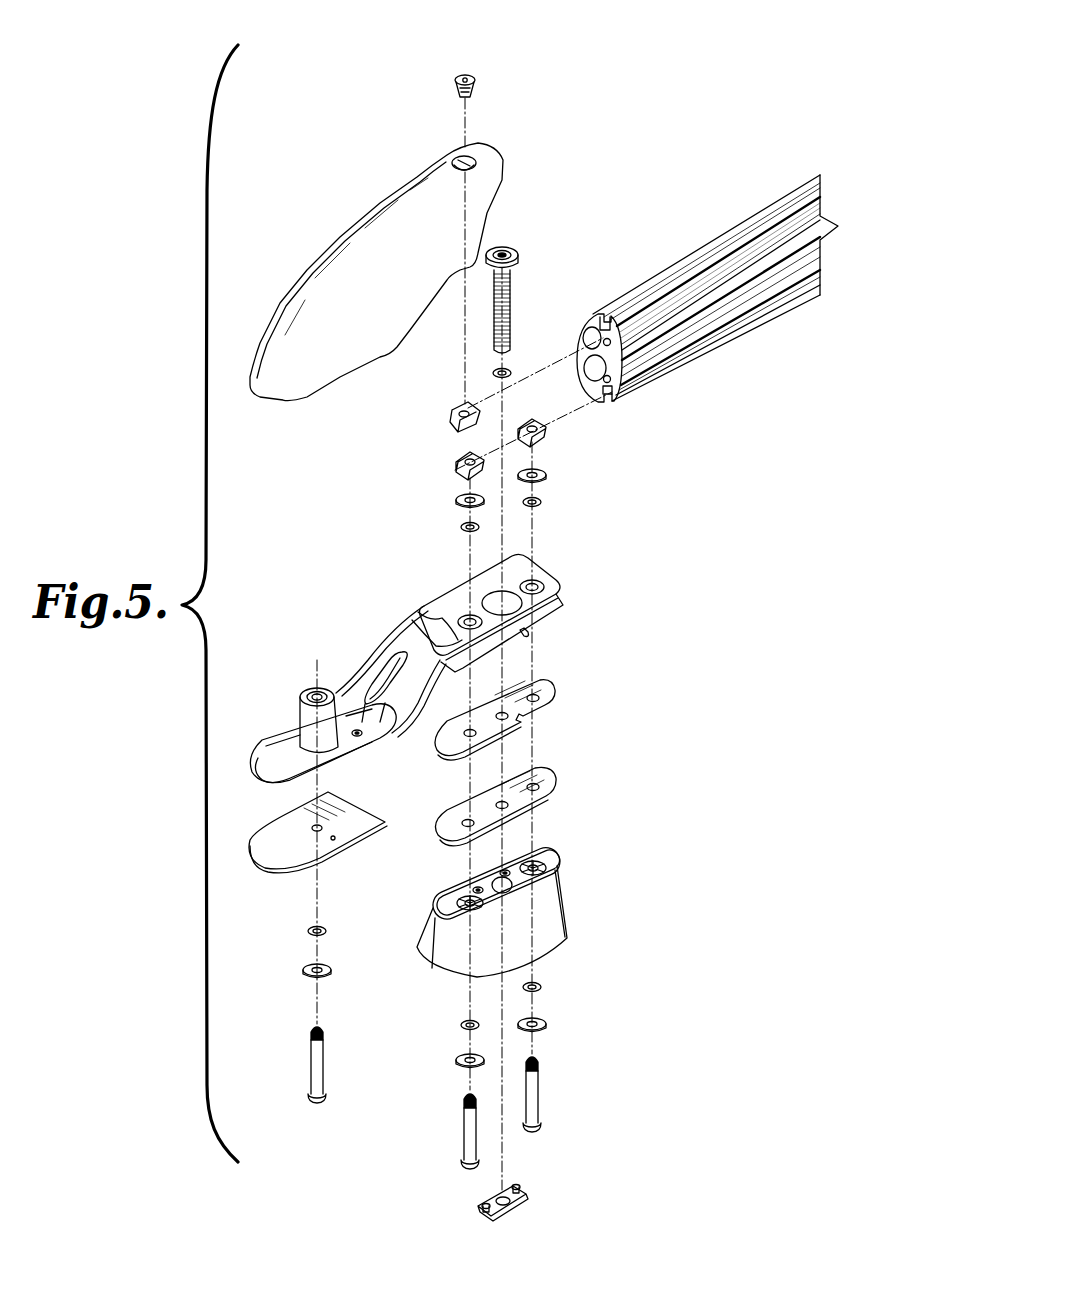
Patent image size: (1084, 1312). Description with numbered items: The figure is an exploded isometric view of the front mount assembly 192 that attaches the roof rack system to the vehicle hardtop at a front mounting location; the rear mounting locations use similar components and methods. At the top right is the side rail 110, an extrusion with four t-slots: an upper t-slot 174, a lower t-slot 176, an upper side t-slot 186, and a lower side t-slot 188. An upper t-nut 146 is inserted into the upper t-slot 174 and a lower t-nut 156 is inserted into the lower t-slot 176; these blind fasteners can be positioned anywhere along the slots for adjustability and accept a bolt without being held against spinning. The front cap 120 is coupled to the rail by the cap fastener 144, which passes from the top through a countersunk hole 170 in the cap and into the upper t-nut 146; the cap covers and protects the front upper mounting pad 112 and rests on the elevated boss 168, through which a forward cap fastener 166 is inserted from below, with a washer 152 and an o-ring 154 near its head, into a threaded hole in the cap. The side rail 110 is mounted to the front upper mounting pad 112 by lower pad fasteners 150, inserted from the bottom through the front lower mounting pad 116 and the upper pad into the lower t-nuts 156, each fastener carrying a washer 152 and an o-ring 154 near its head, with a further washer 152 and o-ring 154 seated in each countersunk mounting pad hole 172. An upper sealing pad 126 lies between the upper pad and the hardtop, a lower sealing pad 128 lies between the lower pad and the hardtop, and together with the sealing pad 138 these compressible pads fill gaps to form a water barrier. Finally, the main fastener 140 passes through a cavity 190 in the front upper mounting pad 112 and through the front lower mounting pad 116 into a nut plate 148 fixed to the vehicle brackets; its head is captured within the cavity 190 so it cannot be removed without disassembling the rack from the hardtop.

The side rail 110 is at (690, 368).
The front upper mounting pad 112 is at (565, 596).
The front lower mounting pad 116 is at (428, 950).
The front cap 120 is at (350, 226).
The upper sealing pad 126 is at (556, 694).
The lower sealing pad 128 is at (557, 786).
The sealing pad 138 is at (362, 808).
The main fastener 140 is at (518, 254).
The cap fastener 144 is at (475, 79).
The upper t-nut 146 is at (456, 408).
The nut plate 148 is at (533, 1193).
The lower pad fastener 150 is at (466, 1134).
The washer 152 is at (456, 500).
The o-ring 154 is at (512, 372).
The lower t-nut 156 is at (456, 466).
The forward cap fastener 166 is at (312, 1070).
The elevated boss 168 is at (300, 702).
The countersunk hole 170 is at (475, 158).
The countersunk mounting pad hole 172 is at (466, 615).
The upper t-slot 174 is at (603, 316).
The lower t-slot 176 is at (608, 402).
The upper side t-slot 186 is at (738, 278).
The lower side t-slot 188 is at (765, 312).
The cavity 190 is at (526, 634).
The front mount assembly 192 is at (697, 70).